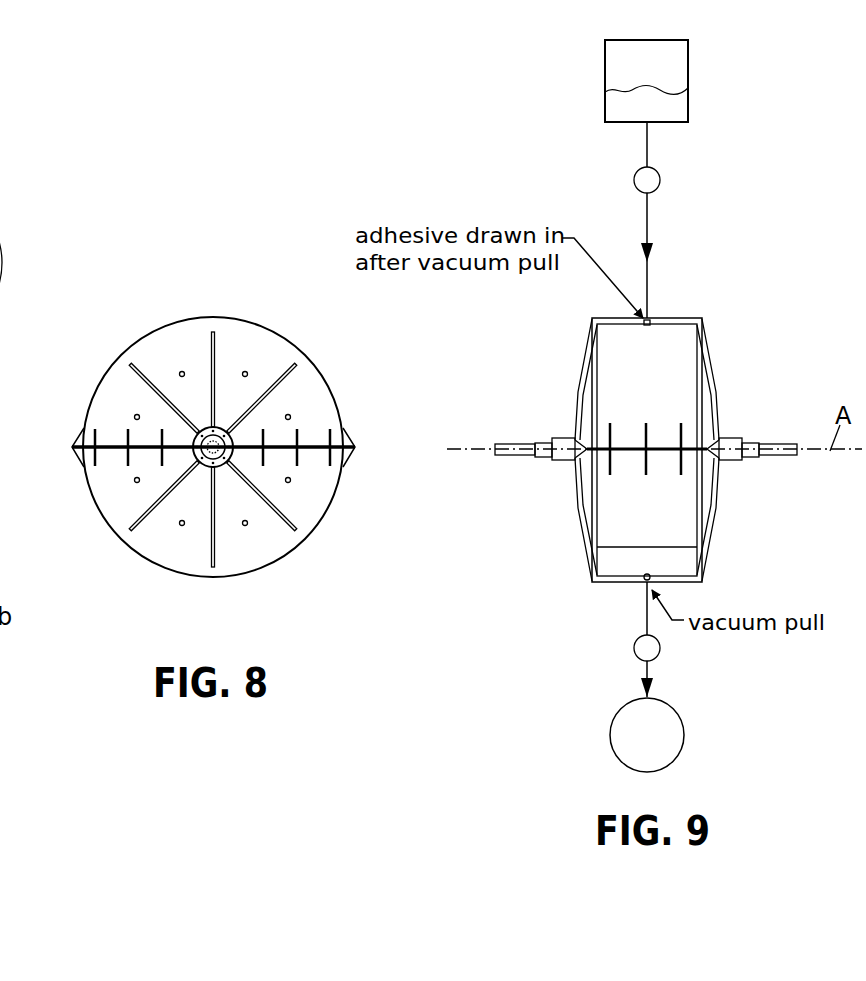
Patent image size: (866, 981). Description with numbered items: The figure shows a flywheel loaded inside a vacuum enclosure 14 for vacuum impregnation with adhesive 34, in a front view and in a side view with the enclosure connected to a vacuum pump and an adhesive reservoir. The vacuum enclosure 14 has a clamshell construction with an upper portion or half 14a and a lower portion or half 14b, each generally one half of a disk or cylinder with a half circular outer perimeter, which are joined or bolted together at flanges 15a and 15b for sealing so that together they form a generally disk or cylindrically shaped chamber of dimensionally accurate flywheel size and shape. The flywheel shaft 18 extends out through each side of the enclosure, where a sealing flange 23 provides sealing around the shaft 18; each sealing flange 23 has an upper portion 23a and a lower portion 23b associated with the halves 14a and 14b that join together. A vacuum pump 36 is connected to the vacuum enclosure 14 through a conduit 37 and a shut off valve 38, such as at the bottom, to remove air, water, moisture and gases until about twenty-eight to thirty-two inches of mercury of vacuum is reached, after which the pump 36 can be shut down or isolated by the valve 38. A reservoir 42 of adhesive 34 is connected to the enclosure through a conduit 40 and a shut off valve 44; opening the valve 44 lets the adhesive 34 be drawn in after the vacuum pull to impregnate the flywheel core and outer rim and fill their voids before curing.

In FIG. 8, the vacuum enclosure 14 is at (171, 331).
In FIG. 9, the vacuum enclosure 14 is at (678, 318).
In FIG. 8, the upper portion or half 14a is at (255, 337).
In FIG. 9, the upper portion or half 14a is at (697, 333).
In FIG. 8, the lower portion or half 14b is at (245, 573).
In FIG. 9, the lower portion or half 14b is at (700, 540).
In FIG. 8, the flange 15a is at (303, 443).
In FIG. 9, the flange 15a is at (632, 440).
In FIG. 8, the flange 15b is at (318, 455).
In FIG. 9, the flange 15b is at (636, 455).
In FIG. 8, the shaft 18 is at (204, 472).
In FIG. 9, the shaft 18 is at (760, 441).
In FIG. 8, the sealing flange 23 is at (195, 432).
In FIG. 9, the sealing flange 23 is at (578, 460).
In FIG. 8, the upper portion of sealing flange 23a is at (231, 427).
In FIG. 8, the lower portion of sealing flange 23b is at (223, 465).
In FIG. 9, the adhesive 34 is at (620, 108).
In FIG. 9, the vacuum pump 36 is at (675, 710).
In FIG. 9, the conduit 37 is at (645, 609).
In FIG. 9, the shut off valve 38 is at (633, 648).
In FIG. 9, the conduit 40 is at (648, 218).
In FIG. 9, the reservoir 42 is at (690, 60).
In FIG. 9, the shut off valve 44 is at (633, 180).